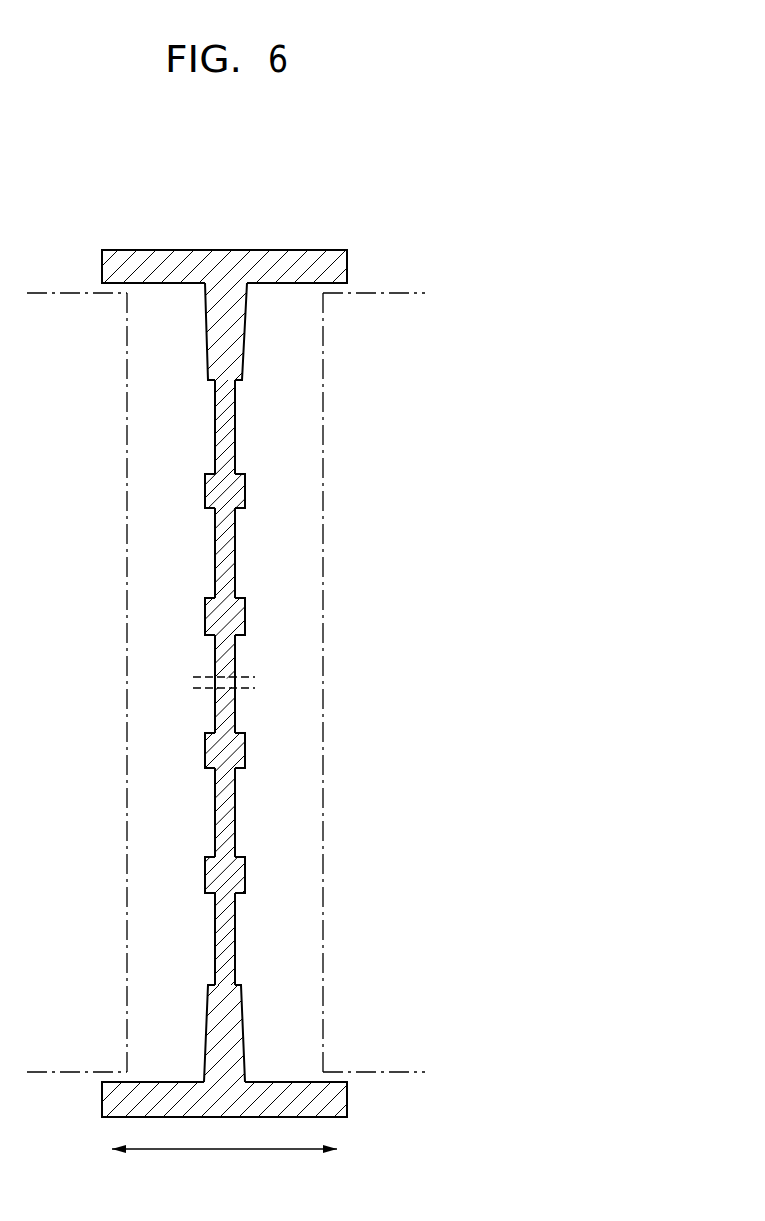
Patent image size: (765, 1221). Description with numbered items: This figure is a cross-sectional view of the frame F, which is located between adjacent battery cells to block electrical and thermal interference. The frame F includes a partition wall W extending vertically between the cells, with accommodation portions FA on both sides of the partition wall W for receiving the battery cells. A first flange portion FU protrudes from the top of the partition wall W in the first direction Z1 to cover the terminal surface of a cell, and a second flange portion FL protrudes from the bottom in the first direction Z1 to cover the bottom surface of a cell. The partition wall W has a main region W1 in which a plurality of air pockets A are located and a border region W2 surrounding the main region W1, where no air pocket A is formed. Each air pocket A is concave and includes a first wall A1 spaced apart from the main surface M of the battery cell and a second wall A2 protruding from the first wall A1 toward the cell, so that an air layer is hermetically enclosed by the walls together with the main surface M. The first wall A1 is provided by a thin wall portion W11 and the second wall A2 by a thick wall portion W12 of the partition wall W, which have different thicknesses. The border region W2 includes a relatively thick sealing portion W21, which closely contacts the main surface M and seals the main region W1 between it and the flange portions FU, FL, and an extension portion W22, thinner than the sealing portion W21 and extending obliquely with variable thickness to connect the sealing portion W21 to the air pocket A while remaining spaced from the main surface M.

The frame F is at (352, 225).
The first flange portion FU is at (348, 269).
The second flange portion FL is at (340, 1095).
The partition wall W is at (171, 359).
The border region W2 is at (294, 334).
The sealing portion W21 is at (225, 306).
The extension portion W22 is at (228, 368).
The main region W1 is at (335, 830).
The thin wall portion W11 is at (228, 816).
The thick wall portion W12 is at (226, 877).
The air pocket A is at (230, 729).
The first wall A1 is at (213, 553).
The second wall A2 is at (208, 511).
The main surface M is at (127, 648).
The accommodation portion FA is at (170, 1020).
The first direction Z1 is at (224, 1164).